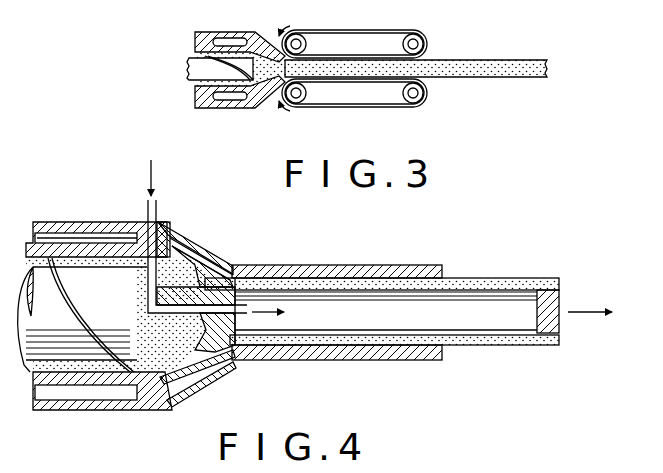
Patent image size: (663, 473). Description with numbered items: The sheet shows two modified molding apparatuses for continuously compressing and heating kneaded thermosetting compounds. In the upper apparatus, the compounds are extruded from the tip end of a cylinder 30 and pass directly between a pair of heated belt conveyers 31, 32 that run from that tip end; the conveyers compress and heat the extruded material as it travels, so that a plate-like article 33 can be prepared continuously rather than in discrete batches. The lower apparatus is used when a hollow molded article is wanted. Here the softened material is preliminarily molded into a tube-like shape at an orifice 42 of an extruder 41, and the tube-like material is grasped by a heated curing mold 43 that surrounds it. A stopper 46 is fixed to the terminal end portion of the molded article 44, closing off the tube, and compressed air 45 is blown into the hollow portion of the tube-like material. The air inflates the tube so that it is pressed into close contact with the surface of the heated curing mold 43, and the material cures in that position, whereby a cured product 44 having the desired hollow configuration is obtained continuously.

In FIG. 3, the cylinder 30 is at (270, 34).
In FIG. 3, the heated belt conveyer 31 is at (360, 30).
In FIG. 3, the heated belt conveyer 32 is at (360, 107).
In FIG. 3, the plate-like article 33 is at (518, 78).
In FIG. 4, the extruder 41 is at (96, 400).
In FIG. 4, the orifice 42 is at (213, 378).
In FIG. 4, the heated curing mold 43 is at (293, 360).
In FIG. 4, the molded article 44 is at (512, 344).
In FIG. 4, the compressed air 45 is at (153, 167).
In FIG. 4, the stopper 46 is at (556, 318).